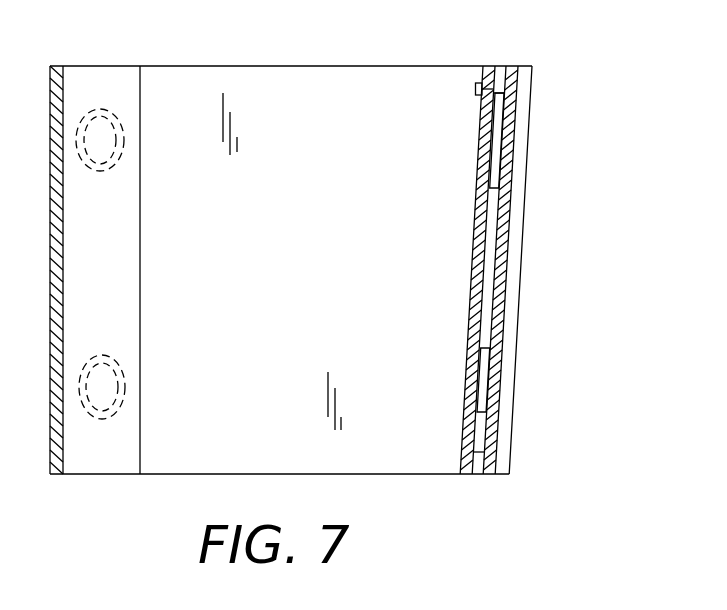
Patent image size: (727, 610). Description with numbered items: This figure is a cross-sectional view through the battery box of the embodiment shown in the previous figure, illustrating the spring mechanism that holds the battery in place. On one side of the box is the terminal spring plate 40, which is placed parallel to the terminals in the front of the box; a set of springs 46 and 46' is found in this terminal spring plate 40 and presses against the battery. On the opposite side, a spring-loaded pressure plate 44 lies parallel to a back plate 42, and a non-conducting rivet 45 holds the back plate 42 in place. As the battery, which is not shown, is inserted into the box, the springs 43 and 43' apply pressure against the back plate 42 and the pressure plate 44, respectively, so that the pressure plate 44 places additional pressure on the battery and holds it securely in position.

The terminal spring plate 40 is at (117, 300).
The back plate 42 is at (502, 307).
The spring 43 is at (541, 140).
The spring 43' is at (537, 380).
The pressure plate 44 is at (466, 363).
The non-conducting rivet 45 is at (490, 89).
The spring 46 is at (115, 98).
The spring 46' is at (148, 387).